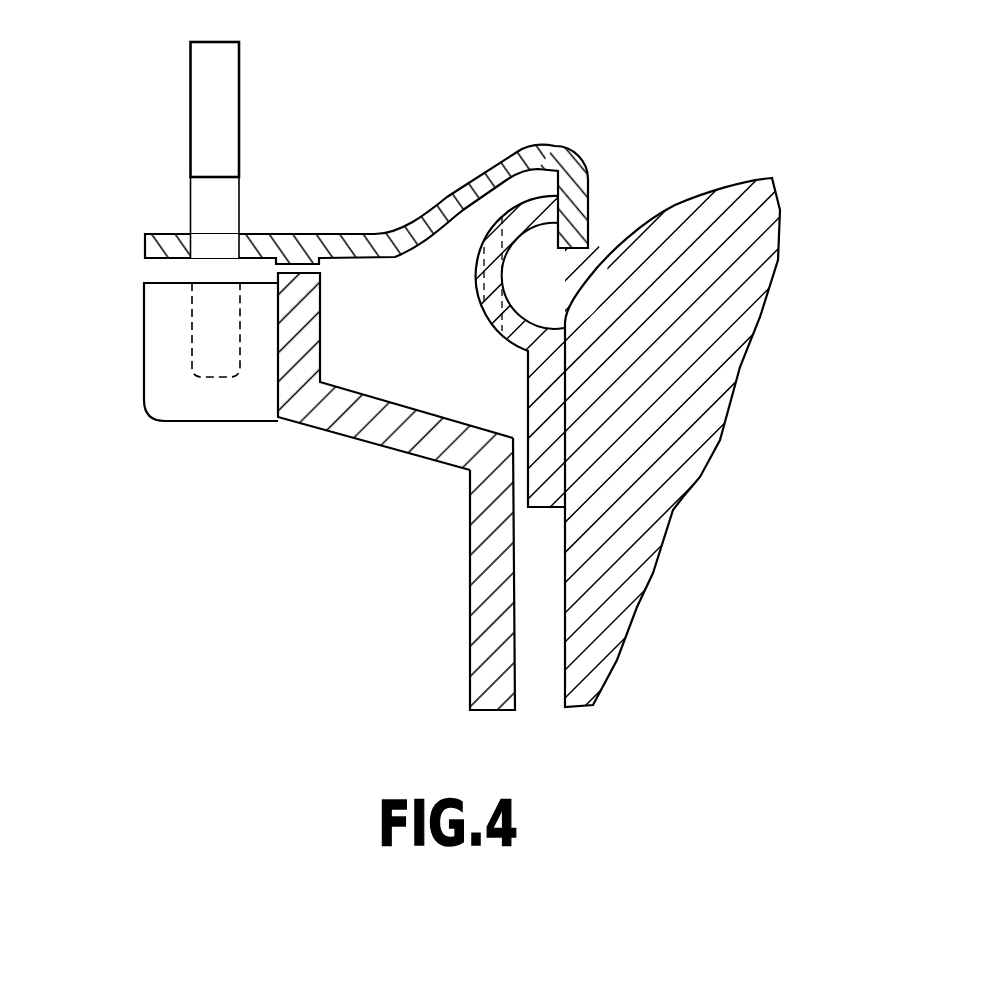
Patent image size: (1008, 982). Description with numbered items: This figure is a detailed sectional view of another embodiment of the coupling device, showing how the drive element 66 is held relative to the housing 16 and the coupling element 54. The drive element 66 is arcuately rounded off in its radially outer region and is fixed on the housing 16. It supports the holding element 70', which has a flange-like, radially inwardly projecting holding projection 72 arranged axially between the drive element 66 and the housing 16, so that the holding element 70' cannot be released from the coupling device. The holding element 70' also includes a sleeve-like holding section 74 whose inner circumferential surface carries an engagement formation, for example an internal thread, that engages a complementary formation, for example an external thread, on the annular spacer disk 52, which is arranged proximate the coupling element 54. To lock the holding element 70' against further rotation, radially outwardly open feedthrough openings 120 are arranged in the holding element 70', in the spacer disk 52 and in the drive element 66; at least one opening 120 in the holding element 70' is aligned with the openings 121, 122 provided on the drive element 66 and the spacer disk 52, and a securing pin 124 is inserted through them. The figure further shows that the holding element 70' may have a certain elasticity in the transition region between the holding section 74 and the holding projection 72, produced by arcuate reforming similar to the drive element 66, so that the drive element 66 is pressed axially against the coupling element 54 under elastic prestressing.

The housing 16 is at (740, 181).
The drive element 66 is at (550, 440).
The opening 122 is at (478, 305).
The holding element 70' is at (405, 157).
The holding projection 72 is at (589, 217).
The holding section 74 is at (300, 233).
The feedthrough opening 120 is at (210, 235).
The pin head 124 is at (225, 77).
The spacer disk 52 is at (165, 380).
The opening 121 is at (208, 305).
The coupling element 54 is at (483, 593).